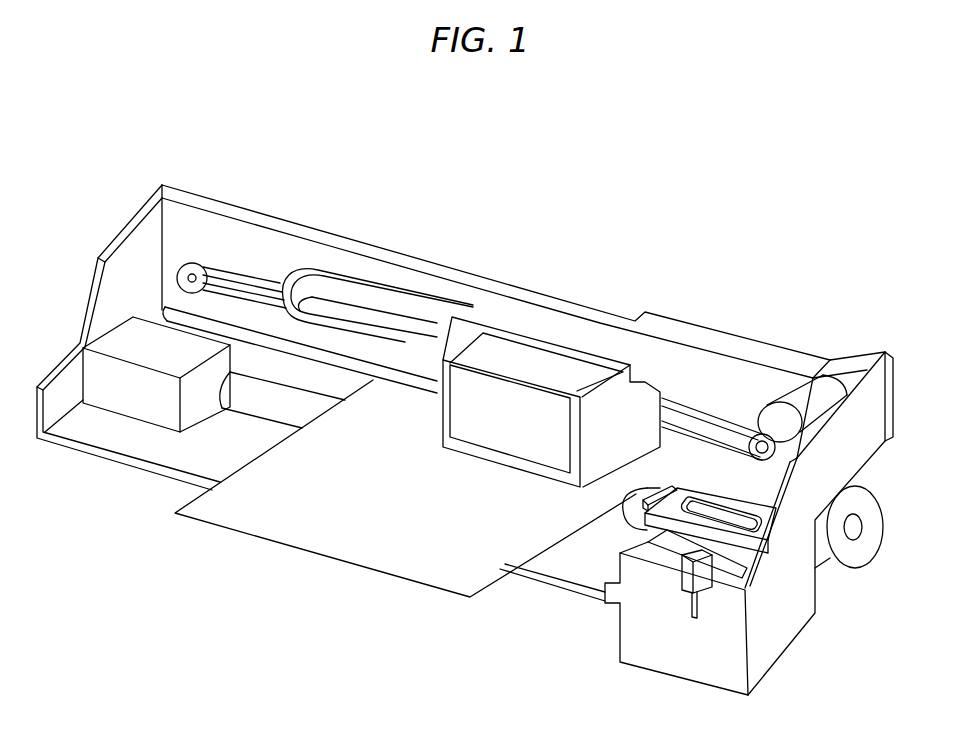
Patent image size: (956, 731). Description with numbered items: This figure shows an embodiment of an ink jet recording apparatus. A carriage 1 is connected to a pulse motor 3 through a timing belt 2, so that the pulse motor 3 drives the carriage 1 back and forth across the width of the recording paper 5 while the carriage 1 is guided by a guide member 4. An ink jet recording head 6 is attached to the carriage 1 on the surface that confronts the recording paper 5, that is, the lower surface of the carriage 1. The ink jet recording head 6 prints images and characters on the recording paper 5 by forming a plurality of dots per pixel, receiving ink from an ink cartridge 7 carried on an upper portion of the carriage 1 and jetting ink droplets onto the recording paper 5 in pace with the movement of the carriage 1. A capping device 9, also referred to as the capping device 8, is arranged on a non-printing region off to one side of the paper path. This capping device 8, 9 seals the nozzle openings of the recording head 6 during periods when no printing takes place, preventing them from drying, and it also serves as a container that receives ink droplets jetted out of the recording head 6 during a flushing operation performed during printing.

The carriage 1 is at (578, 487).
The timing belt 2 is at (253, 275).
The pulse motor 3 is at (800, 400).
The guide member 4 is at (197, 325).
The recording paper 5 is at (440, 573).
The ink jet recording head 6 is at (625, 478).
The ink cartridge 7 is at (530, 363).
The capping device 8 is at (713, 512).
The capping device 9 is at (667, 488).